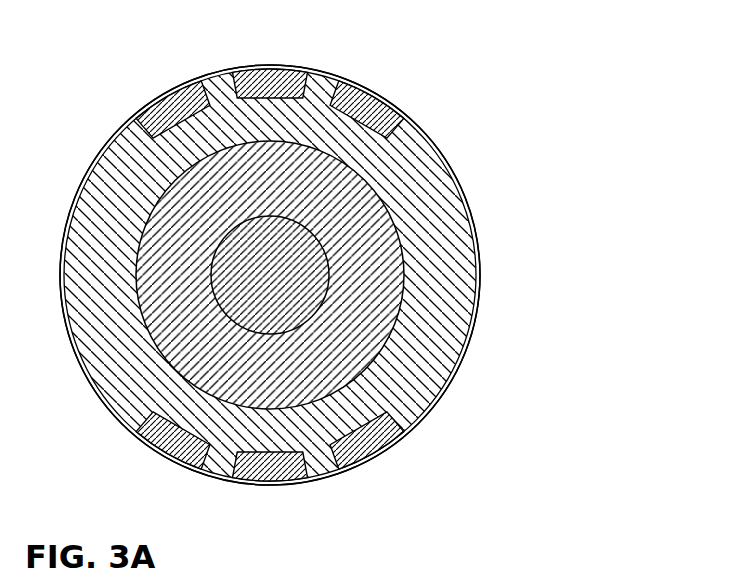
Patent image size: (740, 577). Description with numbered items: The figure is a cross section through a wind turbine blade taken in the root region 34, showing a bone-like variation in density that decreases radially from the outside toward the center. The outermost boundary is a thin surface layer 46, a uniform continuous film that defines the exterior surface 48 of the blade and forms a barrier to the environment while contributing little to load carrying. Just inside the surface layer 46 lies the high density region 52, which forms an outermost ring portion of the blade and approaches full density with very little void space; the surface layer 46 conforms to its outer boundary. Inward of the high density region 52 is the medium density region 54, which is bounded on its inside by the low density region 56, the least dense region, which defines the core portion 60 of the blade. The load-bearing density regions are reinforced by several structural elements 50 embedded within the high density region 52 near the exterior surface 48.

The root region 34 is at (502, 265).
The surface layer 46 is at (462, 367).
The exterior surface 48 is at (110, 140).
The structural elements 50 is at (168, 103).
The high density region 52 is at (427, 183).
The medium density region 54 is at (380, 313).
The low density region 56 is at (280, 288).
The core portion 60 is at (213, 297).